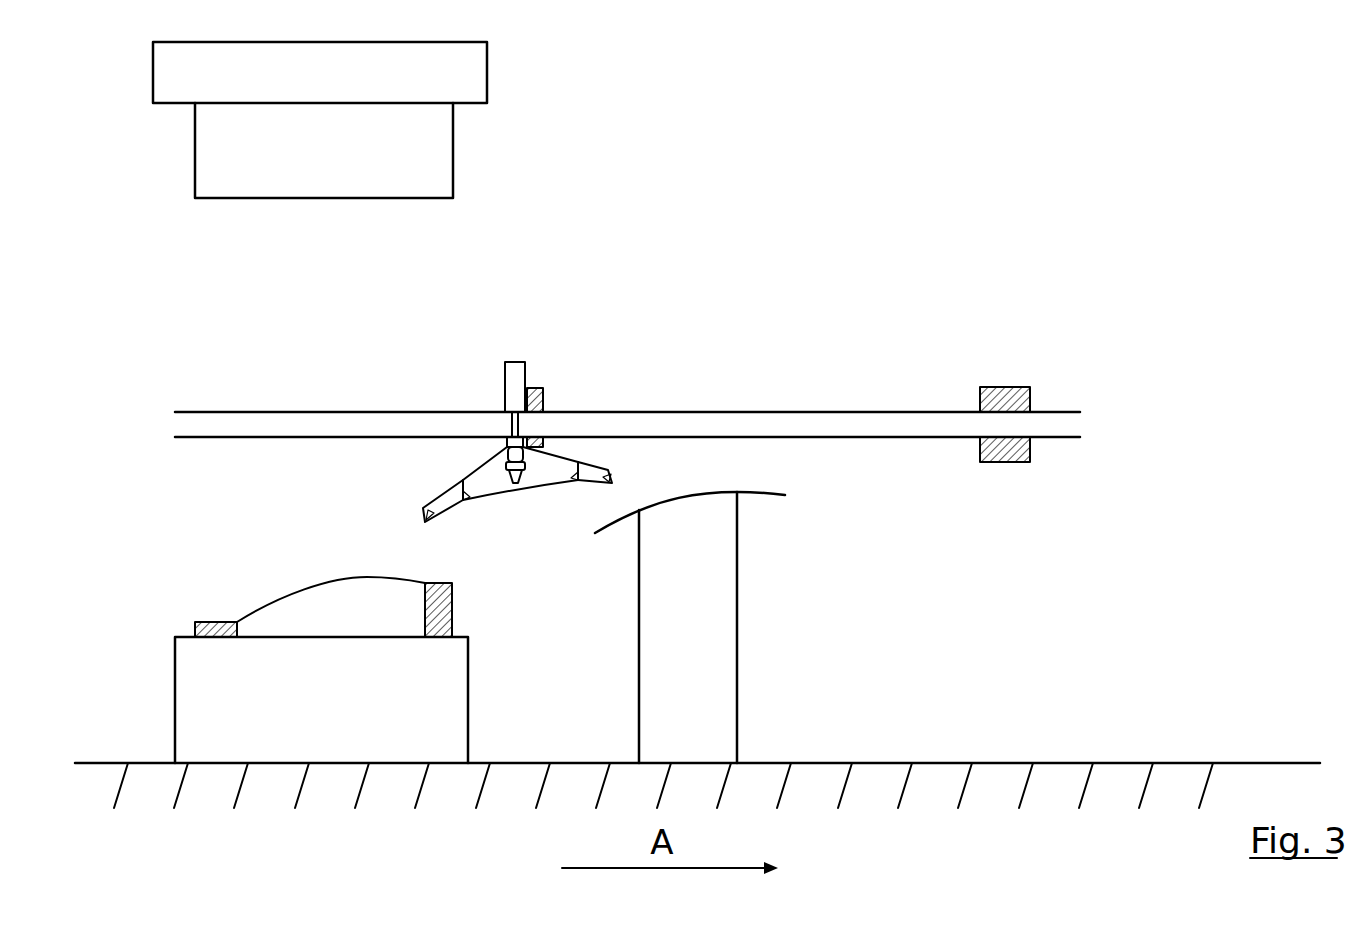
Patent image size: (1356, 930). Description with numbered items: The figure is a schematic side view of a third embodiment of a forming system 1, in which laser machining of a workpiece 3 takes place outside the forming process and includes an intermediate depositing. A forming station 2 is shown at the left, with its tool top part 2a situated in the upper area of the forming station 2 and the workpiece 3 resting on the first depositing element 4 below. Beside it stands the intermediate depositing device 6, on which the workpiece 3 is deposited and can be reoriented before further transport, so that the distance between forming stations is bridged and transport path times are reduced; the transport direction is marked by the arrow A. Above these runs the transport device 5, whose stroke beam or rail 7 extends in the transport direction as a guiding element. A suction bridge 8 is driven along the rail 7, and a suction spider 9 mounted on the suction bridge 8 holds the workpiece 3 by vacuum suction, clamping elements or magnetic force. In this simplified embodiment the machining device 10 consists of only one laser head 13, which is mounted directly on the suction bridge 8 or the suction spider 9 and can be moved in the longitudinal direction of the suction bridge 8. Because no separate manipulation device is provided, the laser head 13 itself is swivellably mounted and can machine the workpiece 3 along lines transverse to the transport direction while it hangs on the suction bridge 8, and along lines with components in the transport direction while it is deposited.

The forming system 1 is at (800, 157).
The forming station 2 is at (287, 735).
The tool top part 2a is at (437, 172).
The workpiece 3 is at (487, 493).
The first depositing element 4 is at (320, 582).
The transport device 5 is at (386, 395).
The intermediate depositing device 6 is at (686, 497).
The rail 7 is at (837, 427).
The suction bridge 8 is at (543, 393).
The suction spider 9 is at (445, 490).
The machining device 10 is at (510, 514).
The laser head 13 is at (522, 485).